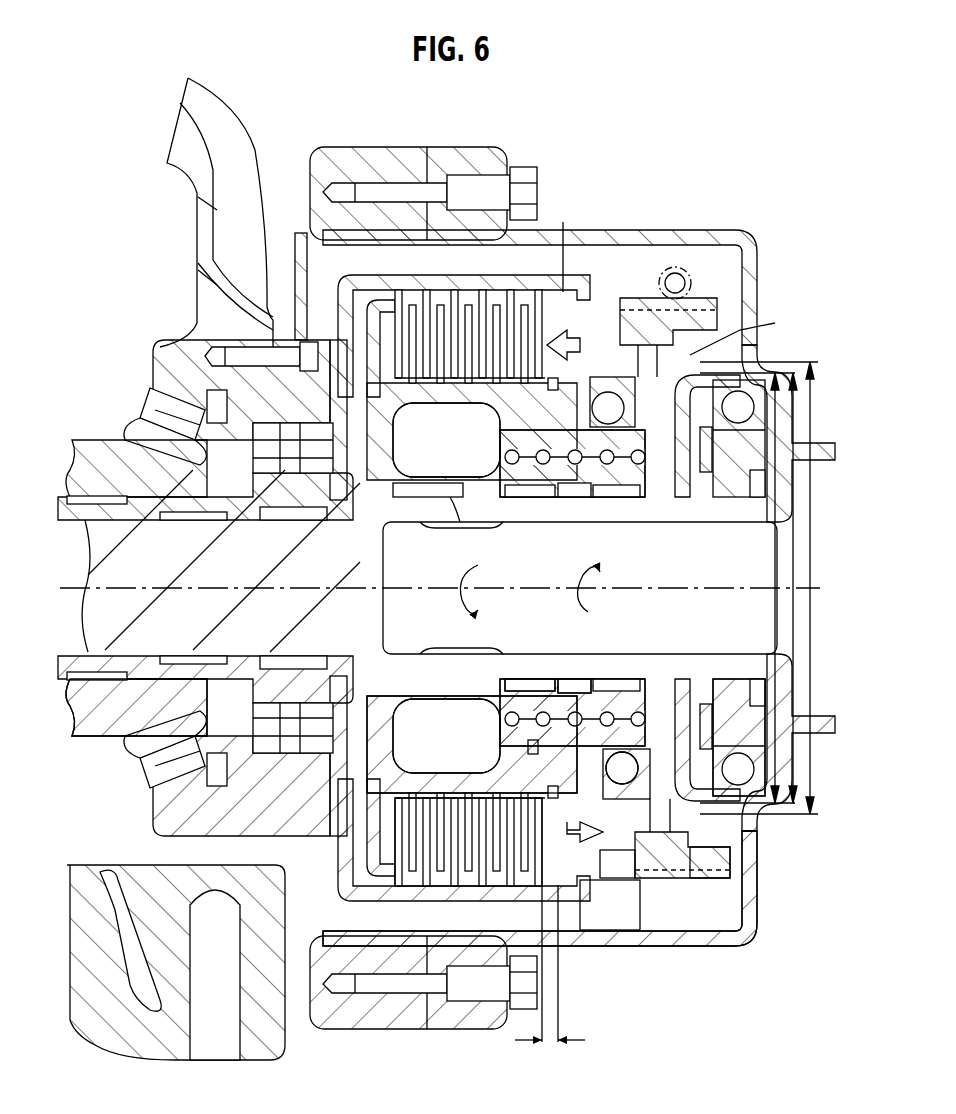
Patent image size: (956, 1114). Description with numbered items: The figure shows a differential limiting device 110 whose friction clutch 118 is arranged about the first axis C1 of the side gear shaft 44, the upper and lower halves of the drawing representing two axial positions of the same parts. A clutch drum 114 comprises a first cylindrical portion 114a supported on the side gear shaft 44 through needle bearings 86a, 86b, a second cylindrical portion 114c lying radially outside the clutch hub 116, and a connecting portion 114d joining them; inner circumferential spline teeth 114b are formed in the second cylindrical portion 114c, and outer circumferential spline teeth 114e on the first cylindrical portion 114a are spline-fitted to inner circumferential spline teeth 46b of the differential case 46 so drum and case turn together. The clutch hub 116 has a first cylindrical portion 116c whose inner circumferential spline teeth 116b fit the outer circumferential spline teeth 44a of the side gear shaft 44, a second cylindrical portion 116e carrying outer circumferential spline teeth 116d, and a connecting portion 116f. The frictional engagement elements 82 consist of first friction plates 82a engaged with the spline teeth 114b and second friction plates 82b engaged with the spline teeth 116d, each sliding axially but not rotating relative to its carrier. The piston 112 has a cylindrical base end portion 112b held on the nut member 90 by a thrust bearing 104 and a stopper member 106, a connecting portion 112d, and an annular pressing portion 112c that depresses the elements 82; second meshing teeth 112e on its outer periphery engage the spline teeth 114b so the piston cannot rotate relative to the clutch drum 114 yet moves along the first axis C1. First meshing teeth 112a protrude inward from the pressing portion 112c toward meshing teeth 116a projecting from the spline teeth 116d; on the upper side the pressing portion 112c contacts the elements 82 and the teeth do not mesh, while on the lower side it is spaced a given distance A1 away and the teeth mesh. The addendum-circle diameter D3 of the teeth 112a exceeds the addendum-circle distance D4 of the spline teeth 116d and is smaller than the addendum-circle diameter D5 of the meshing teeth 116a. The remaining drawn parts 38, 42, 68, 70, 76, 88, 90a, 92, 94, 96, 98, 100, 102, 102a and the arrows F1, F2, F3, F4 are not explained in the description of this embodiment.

The arm 38 is at (205, 228).
The tapered roller bearing 42 is at (170, 440).
The side gear shaft 44 is at (393, 603).
The outer circumferential spline teeth 44a is at (427, 497).
The differential case 46 is at (105, 450).
The inner circumferential spline teeth 46b is at (105, 660).
The housing wall 68 is at (292, 337).
The bolt 70 is at (405, 155).
The seal 76 is at (460, 500).
The frictional engagement elements 82 is at (388, 333).
The first friction plates 82a is at (425, 888).
The second friction plates 82b is at (420, 395).
The needle bearing 86a is at (210, 520).
The needle bearing 86b is at (292, 520).
The housing cover 88 is at (700, 270).
The nut member 90 is at (525, 490).
The retainer arm 90a is at (722, 372).
The bearing 92 is at (668, 497).
The spacer 94 is at (653, 424).
The ball bearing 96 is at (575, 466).
The ring 98 is at (540, 495).
The bolt hole 100 is at (688, 286).
The housing 102 is at (725, 930).
The housing bearing portion 102a is at (740, 758).
The thrust bearing 104 is at (624, 765).
The stopper member 106 is at (525, 690).
The differential limiting device 110 is at (622, 190).
The piston 112 is at (615, 870).
The first meshing teeth 112a is at (553, 382).
The cylindrical base end portion 112b is at (575, 690).
The annular pressing portion 112c is at (603, 878).
The connecting portion 112d is at (710, 888).
The second meshing teeth 112e is at (593, 932).
The clutch drum 114 is at (302, 240).
The first cylindrical portion 114a is at (182, 522).
The inner circumferential spline teeth 114b is at (573, 244).
The second cylindrical portion 114c is at (428, 280).
The connecting portion 114d is at (261, 356).
The outer circumferential spline teeth 114e is at (140, 523).
The clutch hub 116 is at (403, 757).
The meshing teeth 116a is at (761, 331).
The inner circumferential spline teeth 116b is at (500, 480).
The first cylindrical portion 116c is at (440, 480).
The outer circumferential spline teeth 116d is at (490, 792).
The second cylindrical portion 116e is at (530, 748).
The connecting portion 116f is at (385, 747).
The friction clutch 118 is at (592, 272).
The force F1 is at (588, 600).
The force F2 is at (567, 860).
The force F3 is at (472, 612).
The force F4 is at (548, 330).
The diameter of addendum circle of first meshing teeth D3 is at (810, 557).
The distance of addendum circle of outer circumferential spline teeth D4 is at (775, 560).
The diameter of addendum circle of meshing teeth D5 is at (805, 640).
The given distance A1 is at (550, 980).
The first axis C1 is at (238, 590).